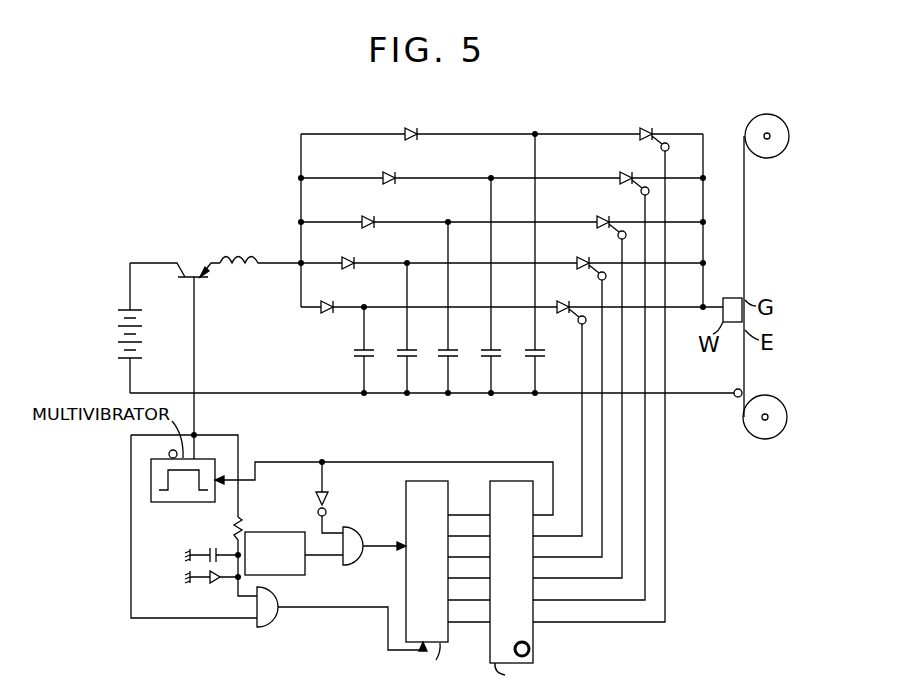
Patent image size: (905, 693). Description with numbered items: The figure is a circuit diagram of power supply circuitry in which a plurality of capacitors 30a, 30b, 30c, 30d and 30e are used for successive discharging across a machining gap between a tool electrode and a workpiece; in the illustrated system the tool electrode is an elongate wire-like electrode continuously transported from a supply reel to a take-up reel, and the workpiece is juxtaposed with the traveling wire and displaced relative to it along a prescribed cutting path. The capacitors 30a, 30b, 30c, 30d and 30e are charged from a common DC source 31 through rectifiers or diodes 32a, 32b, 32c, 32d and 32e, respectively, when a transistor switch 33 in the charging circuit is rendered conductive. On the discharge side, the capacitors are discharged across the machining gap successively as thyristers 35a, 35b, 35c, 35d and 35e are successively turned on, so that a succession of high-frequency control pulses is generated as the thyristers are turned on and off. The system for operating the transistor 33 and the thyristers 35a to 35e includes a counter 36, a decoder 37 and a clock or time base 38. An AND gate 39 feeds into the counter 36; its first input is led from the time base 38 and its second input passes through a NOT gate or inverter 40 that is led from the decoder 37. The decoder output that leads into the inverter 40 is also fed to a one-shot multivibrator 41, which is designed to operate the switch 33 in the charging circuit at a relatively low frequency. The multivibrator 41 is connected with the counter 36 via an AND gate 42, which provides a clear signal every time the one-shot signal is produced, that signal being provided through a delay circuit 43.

The capacitor 30a is at (547, 352).
The capacitor 30b is at (503, 352).
The capacitor 30c is at (460, 352).
The capacitor 30d is at (419, 352).
The capacitor 30e is at (376, 352).
The common DC source 31 is at (150, 344).
The diode 32a is at (405, 132).
The diode 32b is at (383, 177).
The diode 32c is at (362, 221).
The diode 32d is at (342, 262).
The diode 32e is at (321, 306).
The transistor switch 33 is at (193, 265).
The thyrister 35a is at (640, 132).
The thyrister 35b is at (620, 177).
The thyrister 35c is at (597, 221).
The thyrister 35d is at (577, 262).
The thyrister 35e is at (557, 306).
The counter 36 is at (428, 481).
The decoder 37 is at (511, 481).
The clock or time base 38 is at (277, 532).
The AND gate 39 is at (355, 566).
The NOT gate or inverter 40 is at (329, 502).
The one-shot multivibrator 41 is at (173, 504).
The AND gate 42 is at (274, 628).
The delay circuit 43 is at (205, 585).